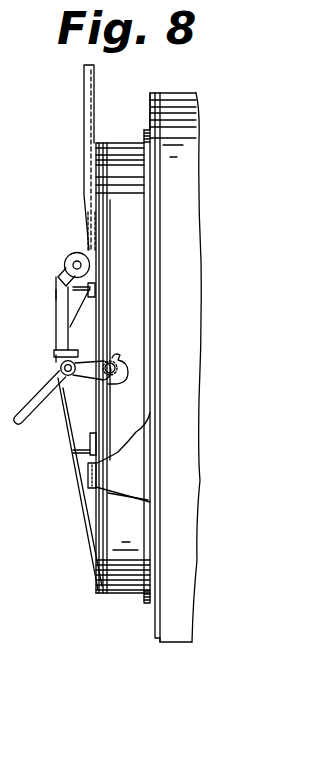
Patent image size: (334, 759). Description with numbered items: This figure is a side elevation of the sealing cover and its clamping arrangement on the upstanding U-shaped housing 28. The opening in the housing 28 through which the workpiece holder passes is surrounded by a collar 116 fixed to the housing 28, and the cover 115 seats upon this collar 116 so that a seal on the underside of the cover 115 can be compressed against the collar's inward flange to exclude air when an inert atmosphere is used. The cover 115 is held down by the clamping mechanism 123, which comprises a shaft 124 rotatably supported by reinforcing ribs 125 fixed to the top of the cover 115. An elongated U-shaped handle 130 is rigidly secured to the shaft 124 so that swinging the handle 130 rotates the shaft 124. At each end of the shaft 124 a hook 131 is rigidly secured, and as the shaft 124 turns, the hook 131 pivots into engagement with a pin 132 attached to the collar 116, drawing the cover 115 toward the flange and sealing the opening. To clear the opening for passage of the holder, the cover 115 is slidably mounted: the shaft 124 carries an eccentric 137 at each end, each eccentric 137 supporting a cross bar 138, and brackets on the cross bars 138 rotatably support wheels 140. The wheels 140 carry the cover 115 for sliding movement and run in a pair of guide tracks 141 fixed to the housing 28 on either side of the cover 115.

The housing 28 is at (173, 632).
The cover 115 is at (95, 592).
The collar 116 is at (120, 160).
The clamping mechanism 123 is at (50, 418).
The shaft 124 is at (62, 364).
The reinforcing ribs 125 is at (85, 420).
The handle 130 is at (60, 367).
The hook 131 is at (123, 383).
The pin 132 is at (111, 360).
The eccentric 137 is at (28, 360).
The cross bar 138 is at (28, 297).
The wheel 140 is at (70, 253).
The guide tracks 141 is at (84, 91).